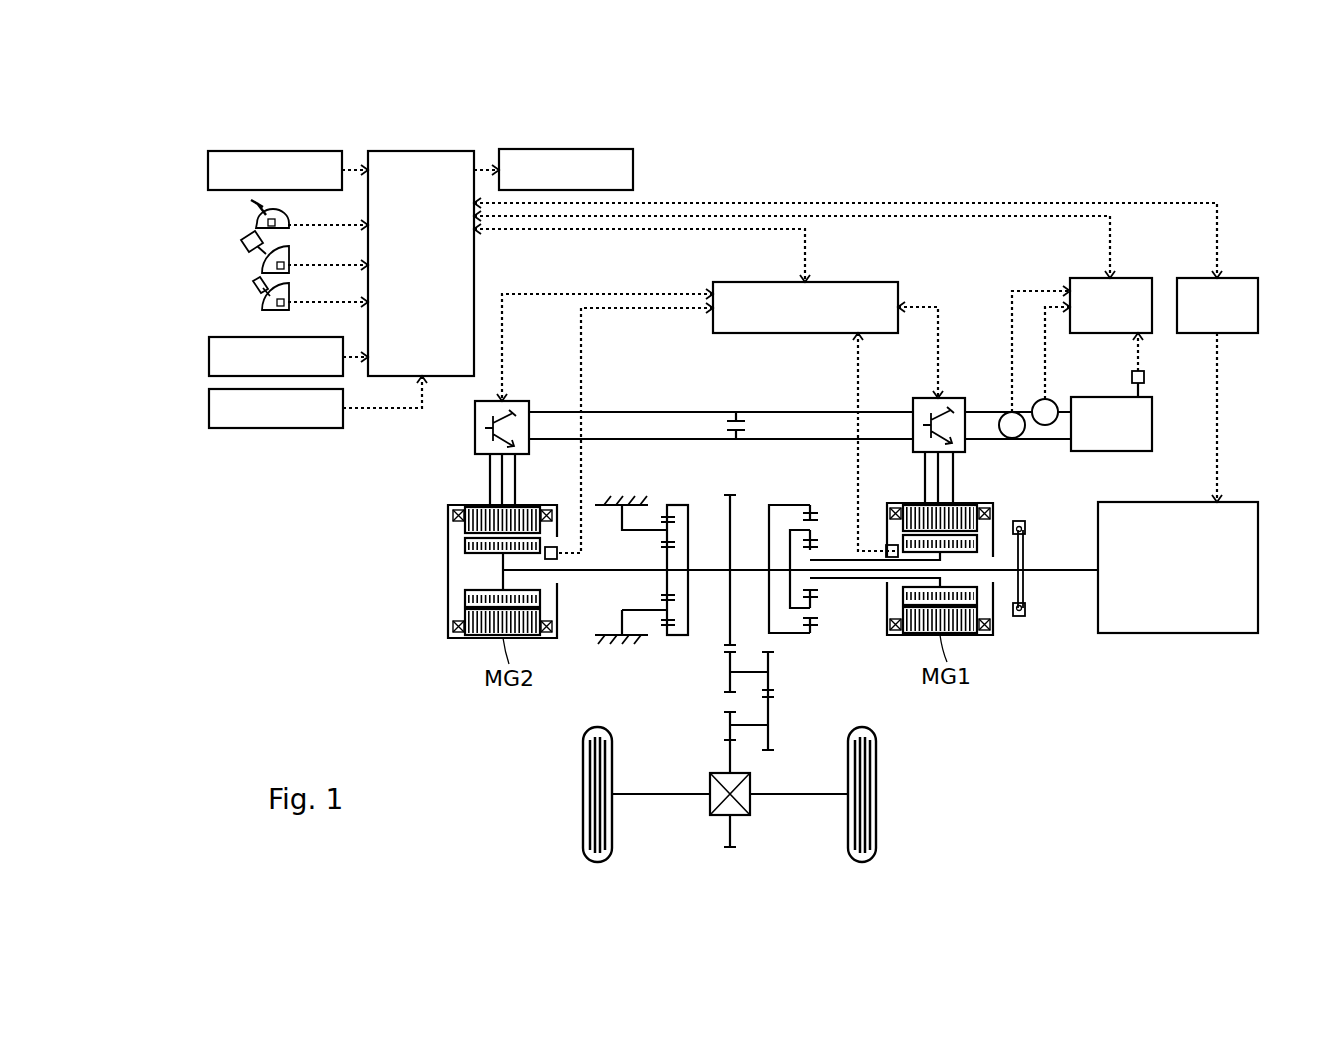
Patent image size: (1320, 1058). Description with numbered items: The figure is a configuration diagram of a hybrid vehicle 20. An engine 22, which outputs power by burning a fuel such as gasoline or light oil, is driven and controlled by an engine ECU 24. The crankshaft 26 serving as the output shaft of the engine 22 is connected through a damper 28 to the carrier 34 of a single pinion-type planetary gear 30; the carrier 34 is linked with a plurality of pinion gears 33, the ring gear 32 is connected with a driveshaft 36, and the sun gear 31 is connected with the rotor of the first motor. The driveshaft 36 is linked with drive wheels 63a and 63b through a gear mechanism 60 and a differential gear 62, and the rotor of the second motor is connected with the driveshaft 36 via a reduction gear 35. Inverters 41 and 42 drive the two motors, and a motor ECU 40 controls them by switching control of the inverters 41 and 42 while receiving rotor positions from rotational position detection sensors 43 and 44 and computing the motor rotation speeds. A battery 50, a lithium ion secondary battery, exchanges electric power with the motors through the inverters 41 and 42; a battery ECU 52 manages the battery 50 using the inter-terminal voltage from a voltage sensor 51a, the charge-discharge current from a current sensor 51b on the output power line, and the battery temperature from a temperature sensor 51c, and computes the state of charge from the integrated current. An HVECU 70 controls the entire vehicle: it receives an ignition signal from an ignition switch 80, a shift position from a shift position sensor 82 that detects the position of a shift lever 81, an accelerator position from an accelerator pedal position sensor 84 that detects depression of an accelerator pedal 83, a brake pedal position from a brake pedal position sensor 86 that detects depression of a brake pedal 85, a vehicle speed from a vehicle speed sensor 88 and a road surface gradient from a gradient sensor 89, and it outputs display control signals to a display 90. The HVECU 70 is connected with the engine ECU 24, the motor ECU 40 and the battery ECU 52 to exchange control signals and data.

The hybrid vehicle 20 is at (982, 139).
The engine 22 is at (1178, 502).
The engine electronic control unit 24 is at (1237, 278).
The crankshaft 26 is at (1058, 567).
The damper 28 is at (1020, 616).
The planetary gear 30 is at (854, 547).
The sun gear 31 is at (815, 586).
The ring gear 32 is at (815, 626).
The pinion gears 33 is at (815, 605).
The carrier 34 is at (795, 530).
The reduction gear 35 is at (674, 486).
The driveshaft 36 is at (742, 568).
The motor electronic control unit 40 is at (841, 282).
The inverter 41 is at (948, 398).
The inverter 42 is at (512, 401).
The rotational position detection sensor 43 is at (892, 545).
The rotational position detection sensor 44 is at (551, 547).
The battery 50 is at (1104, 397).
The voltage sensor 51a is at (1010, 438).
The current sensor 51b is at (1045, 425).
The temperature sensor 51c is at (1146, 378).
The battery electronic control unit 52 is at (1128, 278).
The gear mechanism 60 is at (794, 672).
The differential gear 62 is at (713, 772).
The drive wheel 63a is at (597, 726).
The drive wheel 63b is at (862, 726).
The hybrid electronic control unit 70 is at (421, 150).
The ignition switch 80 is at (208, 168).
The shift lever 81 is at (256, 212).
The shift position sensor 82 is at (262, 225).
The accelerator pedal 83 is at (246, 250).
The accelerator pedal position sensor 84 is at (262, 267).
The brake pedal 85 is at (254, 290).
The brake pedal position sensor 86 is at (262, 305).
The vehicle speed sensor 88 is at (209, 357).
The gradient sensor 89 is at (209, 408).
The display 90 is at (633, 170).